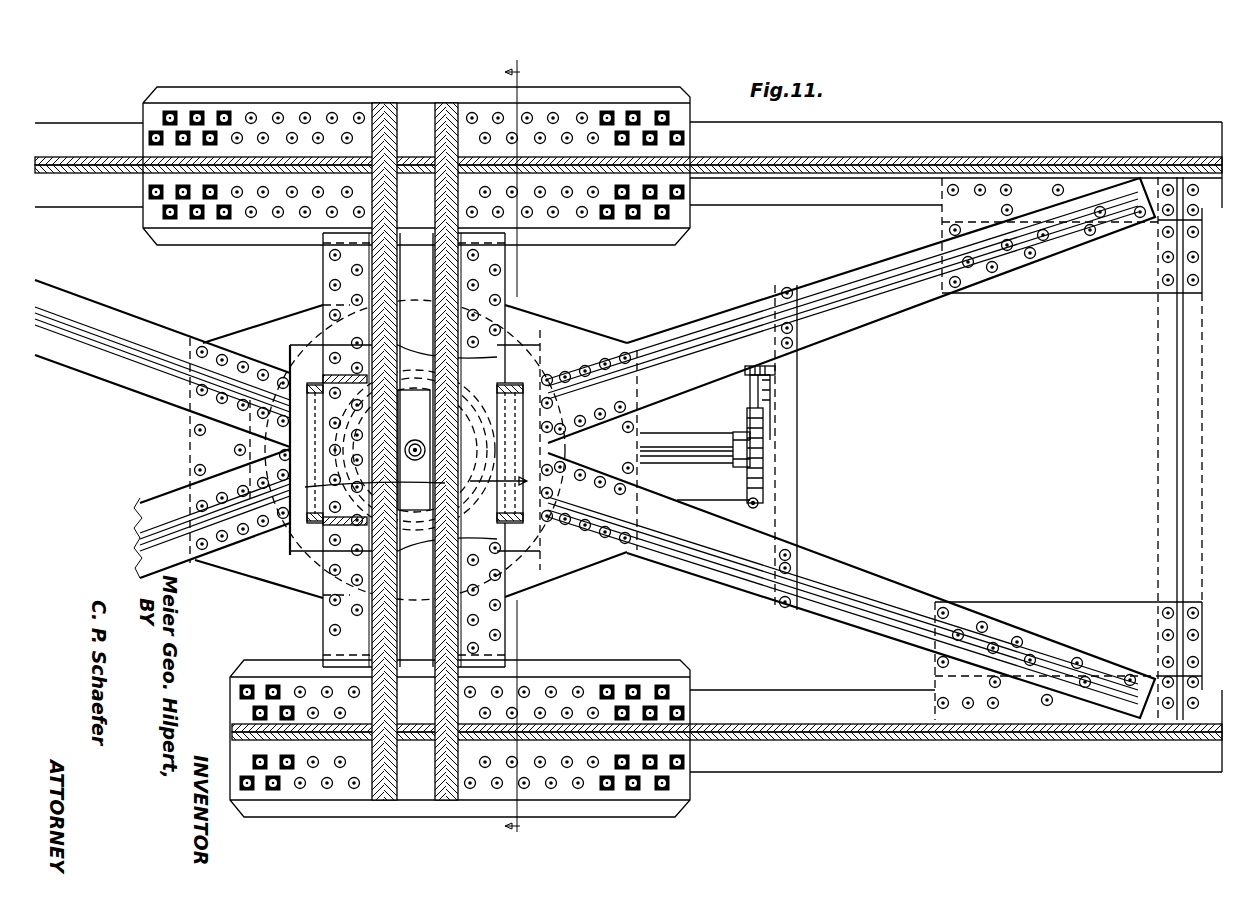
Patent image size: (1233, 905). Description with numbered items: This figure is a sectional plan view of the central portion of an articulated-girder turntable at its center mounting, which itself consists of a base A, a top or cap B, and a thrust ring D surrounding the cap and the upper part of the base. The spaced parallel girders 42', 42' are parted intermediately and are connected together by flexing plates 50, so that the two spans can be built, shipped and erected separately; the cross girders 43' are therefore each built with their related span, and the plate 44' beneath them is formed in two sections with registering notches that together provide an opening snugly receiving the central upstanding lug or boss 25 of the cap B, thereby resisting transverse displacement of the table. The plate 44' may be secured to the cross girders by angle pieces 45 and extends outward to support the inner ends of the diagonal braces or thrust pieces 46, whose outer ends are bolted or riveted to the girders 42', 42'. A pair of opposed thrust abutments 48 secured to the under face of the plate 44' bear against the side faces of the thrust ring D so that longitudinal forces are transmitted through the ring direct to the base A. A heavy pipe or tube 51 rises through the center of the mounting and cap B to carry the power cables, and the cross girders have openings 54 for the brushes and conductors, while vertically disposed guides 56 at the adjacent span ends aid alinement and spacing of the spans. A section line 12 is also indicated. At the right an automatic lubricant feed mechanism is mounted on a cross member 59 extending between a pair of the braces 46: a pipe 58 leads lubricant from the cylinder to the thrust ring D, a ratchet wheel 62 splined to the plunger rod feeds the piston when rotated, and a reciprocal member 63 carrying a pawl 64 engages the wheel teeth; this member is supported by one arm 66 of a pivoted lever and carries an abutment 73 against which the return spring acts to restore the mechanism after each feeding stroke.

The girders 42' is at (628, 490).
The diagonal braces or thrust pieces 46 is at (130, 355).
The plate 44' is at (366, 450).
The thrust abutments 48 is at (573, 340).
The angle pieces 45 is at (330, 312).
The openings 54 is at (310, 520).
The guides 56 is at (420, 190).
The cross girders 43' is at (420, 450).
The flexing plates 50 is at (410, 187).
The pipe or tube 51 is at (426, 448).
The lug or boss 25 is at (417, 472).
The cap B is at (383, 445).
The thrust ring D is at (487, 486).
The base A is at (527, 540).
The section line 12 is at (519, 455).
The cross member 59 is at (793, 496).
The pipe 58 is at (687, 433).
The ratchet wheel 62 is at (757, 445).
The reciprocal member 63 is at (765, 471).
The pawl 64 is at (770, 403).
The abutment 73 is at (775, 371).
The arm 66 is at (698, 500).